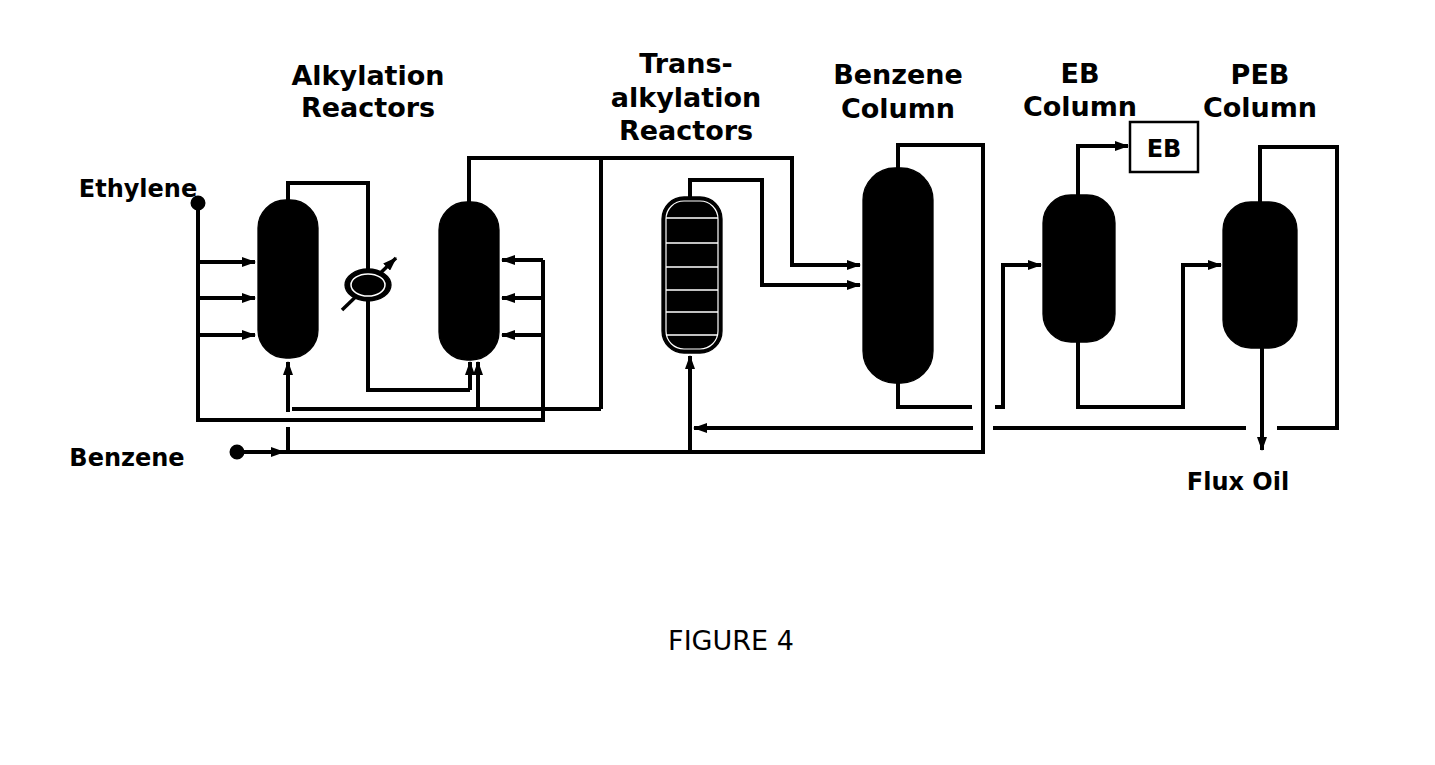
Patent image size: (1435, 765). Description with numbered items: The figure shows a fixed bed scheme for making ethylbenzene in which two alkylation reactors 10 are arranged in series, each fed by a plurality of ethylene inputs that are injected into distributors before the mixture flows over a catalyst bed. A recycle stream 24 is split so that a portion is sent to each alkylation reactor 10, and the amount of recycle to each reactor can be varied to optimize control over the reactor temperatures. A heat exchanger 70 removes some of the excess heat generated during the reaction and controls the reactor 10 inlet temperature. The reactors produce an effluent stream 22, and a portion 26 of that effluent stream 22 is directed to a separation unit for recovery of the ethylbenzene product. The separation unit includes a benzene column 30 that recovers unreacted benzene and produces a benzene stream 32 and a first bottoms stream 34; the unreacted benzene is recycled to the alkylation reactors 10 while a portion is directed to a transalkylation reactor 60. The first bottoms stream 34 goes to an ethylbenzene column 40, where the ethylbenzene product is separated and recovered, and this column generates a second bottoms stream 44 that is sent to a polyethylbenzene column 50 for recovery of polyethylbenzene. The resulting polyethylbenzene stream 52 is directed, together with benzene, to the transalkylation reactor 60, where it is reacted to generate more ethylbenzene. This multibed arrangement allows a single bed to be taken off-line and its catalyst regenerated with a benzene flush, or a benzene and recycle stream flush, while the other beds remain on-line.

The alkylation reactor 10 is at (280, 202).
The heat exchanger 70 is at (372, 268).
The effluent stream 22 is at (511, 159).
The recycle stream 24 is at (603, 214).
The portion of the effluent stream 26 is at (767, 159).
The transalkylation reactor 60 is at (722, 308).
The benzene column 30 is at (863, 346).
The benzene stream 32 is at (986, 191).
The first bottoms stream 34 is at (910, 407).
The ethylbenzene column 40 is at (1115, 252).
The second bottoms stream 44 is at (1105, 407).
The polyethylbenzene column 50 is at (1225, 228).
The polyethylbenzene stream 52 is at (1340, 268).